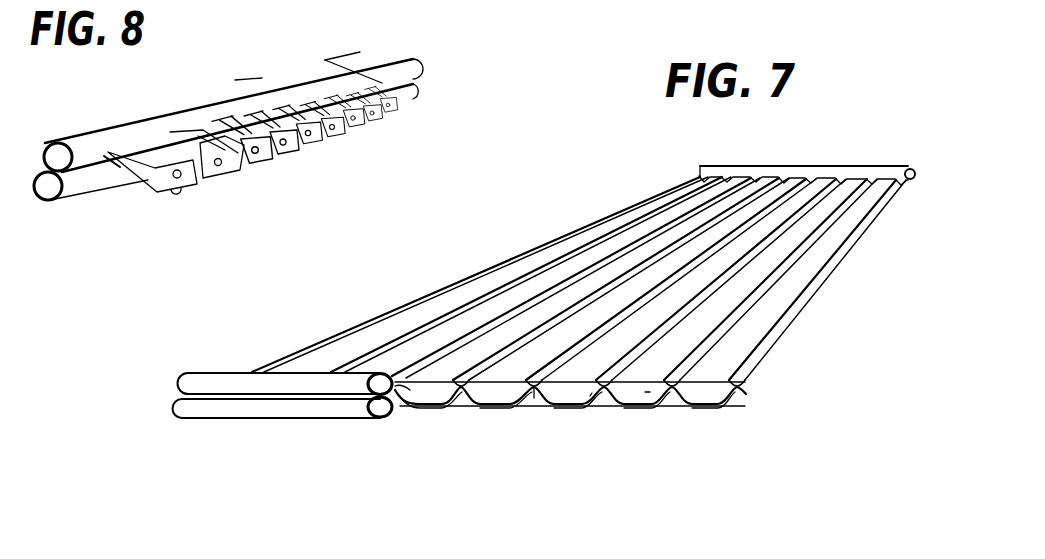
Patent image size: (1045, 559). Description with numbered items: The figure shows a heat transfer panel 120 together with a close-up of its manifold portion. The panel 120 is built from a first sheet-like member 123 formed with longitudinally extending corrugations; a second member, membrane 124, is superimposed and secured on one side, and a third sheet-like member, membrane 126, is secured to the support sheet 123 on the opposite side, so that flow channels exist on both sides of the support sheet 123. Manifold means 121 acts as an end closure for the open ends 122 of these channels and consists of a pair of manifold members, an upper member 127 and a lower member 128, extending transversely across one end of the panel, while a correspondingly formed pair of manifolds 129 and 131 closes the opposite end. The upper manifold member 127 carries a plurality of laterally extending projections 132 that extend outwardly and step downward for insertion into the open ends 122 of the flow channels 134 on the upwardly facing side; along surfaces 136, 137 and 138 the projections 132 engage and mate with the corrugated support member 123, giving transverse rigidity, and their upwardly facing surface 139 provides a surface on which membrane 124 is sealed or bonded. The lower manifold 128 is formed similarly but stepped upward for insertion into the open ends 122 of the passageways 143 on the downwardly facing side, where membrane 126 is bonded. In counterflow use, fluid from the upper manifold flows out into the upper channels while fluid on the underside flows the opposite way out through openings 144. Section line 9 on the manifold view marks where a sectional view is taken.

In FIG. 7, the heat transfer panel 120 is at (592, 290).
In FIG. 8, the manifold means 121 is at (40, 140).
In FIG. 7, the manifold means 121 is at (173, 373).
In FIG. 7, the open ends of flow channels 122 is at (460, 402).
In FIG. 7, the first sheet-like member 123 is at (588, 400).
In FIG. 7, the membrane 124 is at (579, 281).
In FIG. 7, the membrane 126 is at (542, 417).
In FIG. 8, the upper manifold member 127 is at (120, 112).
In FIG. 7, the upper manifold member 127 is at (248, 380).
In FIG. 8, the lower manifold member 128 is at (88, 182).
In FIG. 7, the lower manifold member 128 is at (238, 408).
In FIG. 7, the manifold 129 is at (833, 166).
In FIG. 7, the manifold 131 is at (904, 182).
In FIG. 8, the laterally extending projections 132 is at (188, 183).
In FIG. 7, the flow channels 134 is at (648, 388).
In FIG. 8, the surface of projection 136 is at (143, 175).
In FIG. 8, the surface of projection 137 is at (308, 147).
In FIG. 8, the surface of projection 138 is at (323, 133).
In FIG. 8, the upwardly facing surface 139 is at (158, 150).
In FIG. 7, the passageways 143 is at (437, 417).
In FIG. 8, the outlet openings 144 is at (185, 135).
In FIG. 8, the section line 9- 9 is at (236, 81).